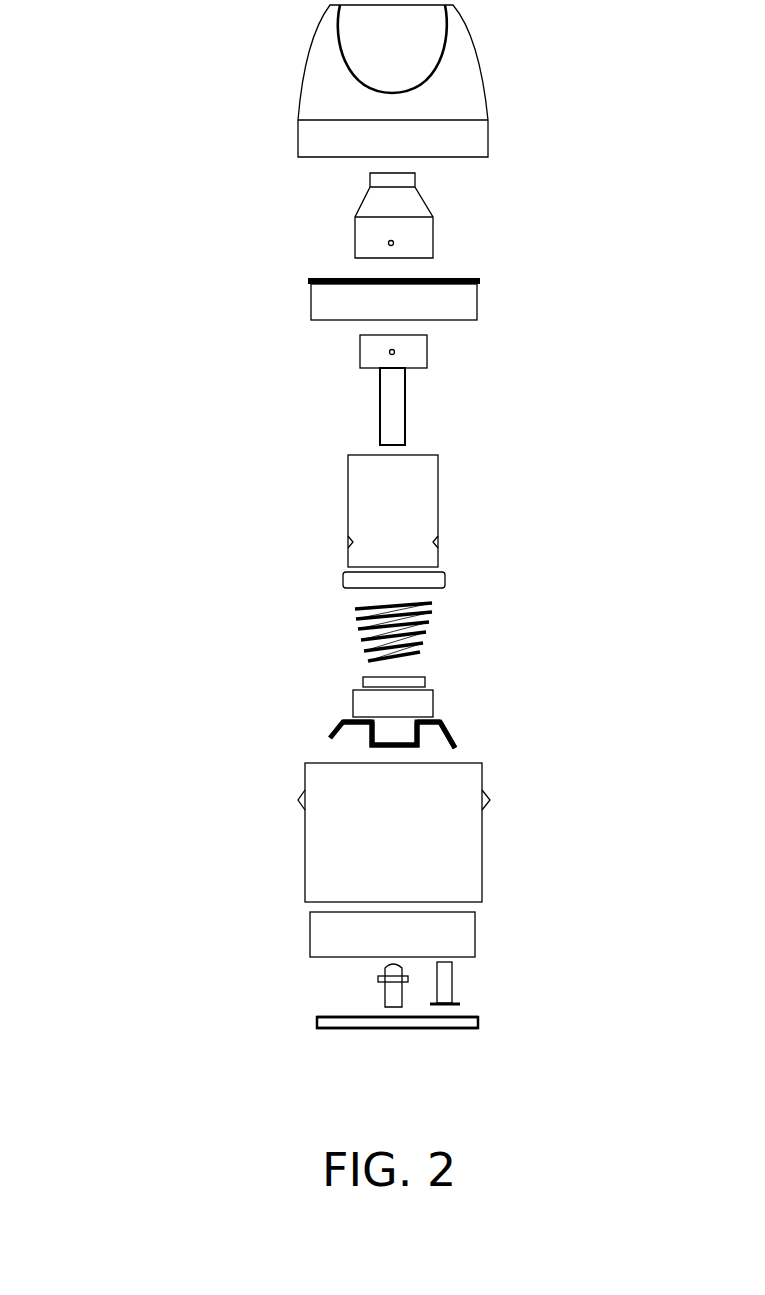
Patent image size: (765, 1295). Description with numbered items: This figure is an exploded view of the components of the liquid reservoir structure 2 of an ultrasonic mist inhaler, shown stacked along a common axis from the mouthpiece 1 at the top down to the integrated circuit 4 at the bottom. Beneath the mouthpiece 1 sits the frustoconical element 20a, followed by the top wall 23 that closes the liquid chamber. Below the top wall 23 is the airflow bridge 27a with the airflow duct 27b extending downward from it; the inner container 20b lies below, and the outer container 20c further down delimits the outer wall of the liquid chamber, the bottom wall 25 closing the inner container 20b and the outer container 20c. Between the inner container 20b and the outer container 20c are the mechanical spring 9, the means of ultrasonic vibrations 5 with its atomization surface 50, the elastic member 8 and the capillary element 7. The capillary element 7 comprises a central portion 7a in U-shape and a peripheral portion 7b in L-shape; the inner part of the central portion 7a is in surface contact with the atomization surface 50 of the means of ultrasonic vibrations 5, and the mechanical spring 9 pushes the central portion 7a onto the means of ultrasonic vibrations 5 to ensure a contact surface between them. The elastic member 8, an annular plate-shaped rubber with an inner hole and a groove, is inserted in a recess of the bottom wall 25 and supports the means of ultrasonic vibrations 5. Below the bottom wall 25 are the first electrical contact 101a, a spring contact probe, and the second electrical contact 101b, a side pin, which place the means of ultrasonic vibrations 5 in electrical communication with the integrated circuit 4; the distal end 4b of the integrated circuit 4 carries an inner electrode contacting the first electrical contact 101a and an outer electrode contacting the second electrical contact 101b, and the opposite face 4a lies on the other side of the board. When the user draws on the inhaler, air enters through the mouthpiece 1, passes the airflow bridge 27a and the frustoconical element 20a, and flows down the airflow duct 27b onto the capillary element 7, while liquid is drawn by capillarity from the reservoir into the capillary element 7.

The mouthpiece 1 is at (255, 65).
The liquid reservoir structure 2 is at (155, 368).
The frustoconical element 20a is at (345, 215).
The top wall 23 is at (450, 303).
The airflow bridge 27a is at (357, 357).
The airflow duct 27b is at (418, 400).
The inner container 20b is at (440, 512).
The mechanical spring 9 is at (355, 630).
The atomization surface 50 is at (428, 677).
The means of ultrasonic vibrations 5 is at (430, 678).
The capillary element 7 is at (345, 722).
The elastic member 8 is at (432, 702).
The central portion 7a is at (388, 758).
The peripheral portion 7b is at (450, 742).
The outer container 20c is at (482, 872).
The bottom wall 25 is at (478, 933).
The first electrical contact 101a is at (380, 965).
The second electrical contact 101b is at (452, 985).
The integrated circuit 4 is at (290, 1022).
The plate upper surface 4a is at (483, 1015).
The distal end 4b is at (463, 1043).